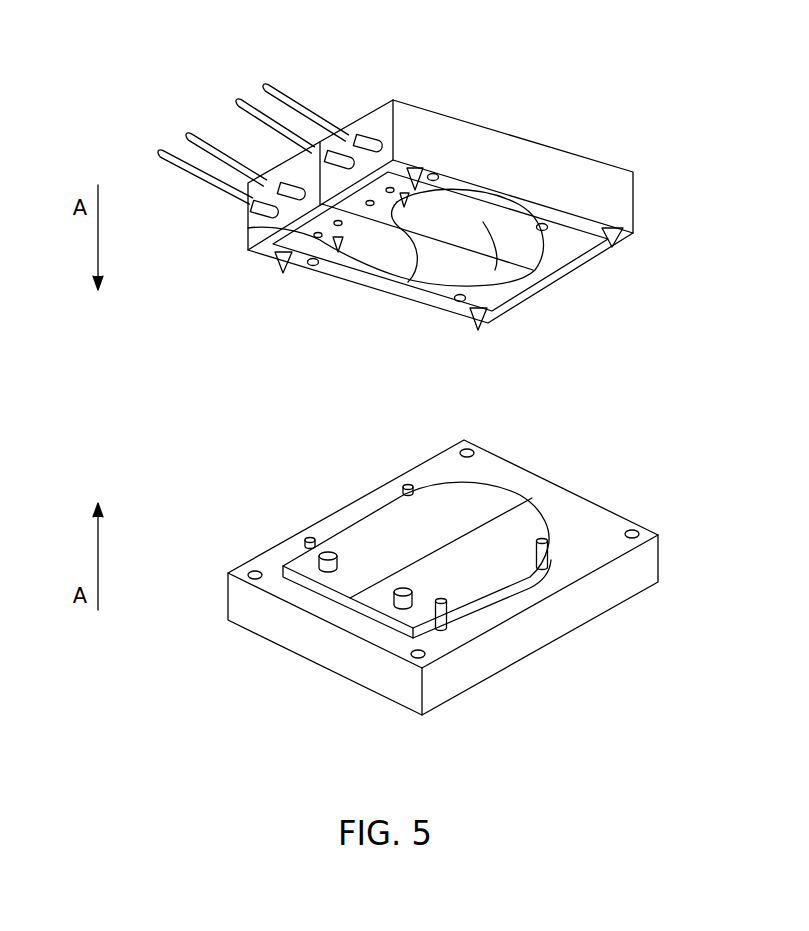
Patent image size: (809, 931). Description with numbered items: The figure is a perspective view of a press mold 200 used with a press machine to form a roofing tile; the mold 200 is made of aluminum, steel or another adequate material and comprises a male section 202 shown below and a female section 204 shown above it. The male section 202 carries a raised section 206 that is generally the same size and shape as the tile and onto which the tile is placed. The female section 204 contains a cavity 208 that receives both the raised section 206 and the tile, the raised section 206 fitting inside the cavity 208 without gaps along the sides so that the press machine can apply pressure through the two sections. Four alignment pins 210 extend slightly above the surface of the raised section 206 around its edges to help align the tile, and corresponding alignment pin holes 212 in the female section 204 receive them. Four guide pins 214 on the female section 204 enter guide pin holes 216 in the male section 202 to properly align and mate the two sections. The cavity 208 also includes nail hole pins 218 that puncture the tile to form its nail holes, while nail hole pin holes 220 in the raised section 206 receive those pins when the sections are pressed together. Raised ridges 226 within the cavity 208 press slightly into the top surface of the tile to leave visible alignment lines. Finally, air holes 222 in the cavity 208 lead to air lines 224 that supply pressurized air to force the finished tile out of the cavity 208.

The press mold 200 is at (704, 113).
The male section 202 is at (620, 598).
The female section 204 is at (426, 107).
The raised section 206 is at (545, 510).
The cavity 208 is at (468, 268).
The alignment pins 210 is at (310, 538).
The alignment pin holes 212 is at (435, 172).
The guide pins 214 is at (415, 166).
The guide pin holes 216 is at (470, 450).
The nail hole pins 218 is at (410, 198).
The nail hole pin holes 220 is at (403, 590).
The air holes 222 is at (369, 198).
The air lines 224 is at (165, 160).
The raised ridges 226 is at (428, 297).